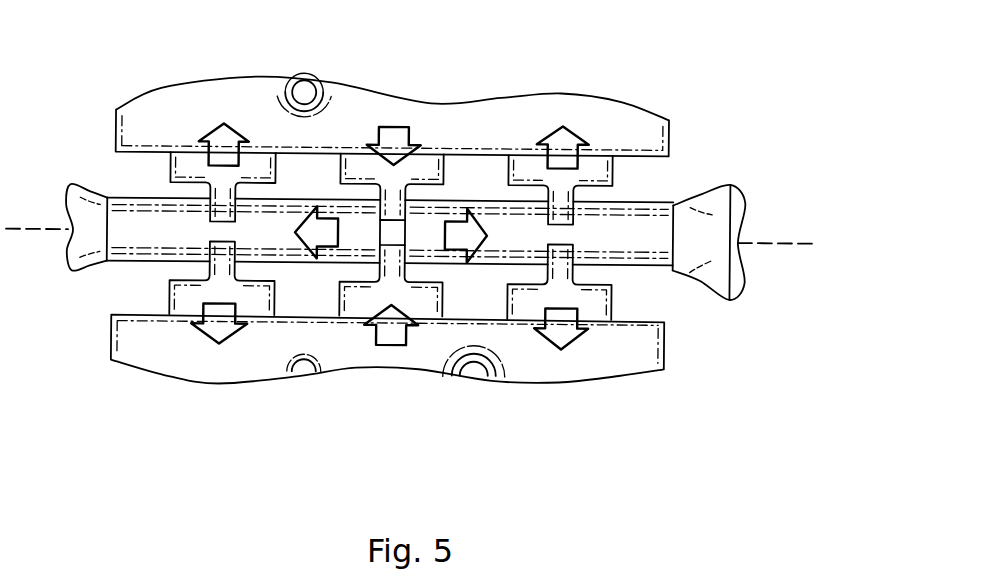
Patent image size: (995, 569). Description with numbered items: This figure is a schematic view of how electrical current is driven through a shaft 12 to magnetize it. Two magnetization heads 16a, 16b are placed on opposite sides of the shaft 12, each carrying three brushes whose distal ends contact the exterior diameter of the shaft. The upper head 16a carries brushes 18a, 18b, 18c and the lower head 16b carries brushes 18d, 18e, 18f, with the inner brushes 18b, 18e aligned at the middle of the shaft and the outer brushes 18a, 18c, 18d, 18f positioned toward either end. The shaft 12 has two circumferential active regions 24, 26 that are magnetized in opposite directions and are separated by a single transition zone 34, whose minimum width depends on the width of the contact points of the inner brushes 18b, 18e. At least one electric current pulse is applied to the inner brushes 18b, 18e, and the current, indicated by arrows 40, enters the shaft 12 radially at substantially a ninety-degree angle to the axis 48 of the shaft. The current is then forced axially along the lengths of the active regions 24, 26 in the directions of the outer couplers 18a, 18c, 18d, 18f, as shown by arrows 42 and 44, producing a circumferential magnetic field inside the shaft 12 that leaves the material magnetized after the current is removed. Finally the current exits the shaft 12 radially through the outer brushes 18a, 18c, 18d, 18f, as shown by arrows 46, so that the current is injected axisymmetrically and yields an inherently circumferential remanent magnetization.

The shaft 12 is at (715, 232).
The magnetization head 16a is at (643, 130).
The magnetization head 16b is at (645, 345).
The brush 18a is at (183, 167).
The brush 18b is at (428, 167).
The brush 18c is at (522, 167).
The brush 18d is at (182, 305).
The brush 18e is at (353, 305).
The brush 18f is at (600, 305).
The circumferential region 24 is at (292, 234).
The circumferential region 26 is at (517, 238).
The transition zone 34 is at (393, 217).
The arrows 40 is at (396, 127).
The arrow 42 is at (472, 210).
The arrow 44 is at (305, 217).
The arrows 46 is at (235, 143).
The axis 48 is at (35, 232).